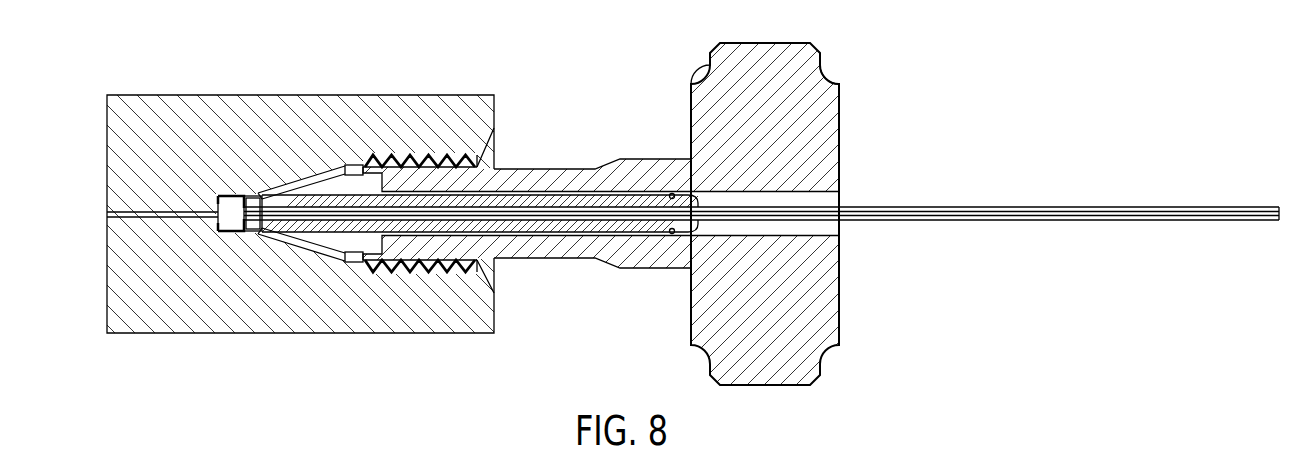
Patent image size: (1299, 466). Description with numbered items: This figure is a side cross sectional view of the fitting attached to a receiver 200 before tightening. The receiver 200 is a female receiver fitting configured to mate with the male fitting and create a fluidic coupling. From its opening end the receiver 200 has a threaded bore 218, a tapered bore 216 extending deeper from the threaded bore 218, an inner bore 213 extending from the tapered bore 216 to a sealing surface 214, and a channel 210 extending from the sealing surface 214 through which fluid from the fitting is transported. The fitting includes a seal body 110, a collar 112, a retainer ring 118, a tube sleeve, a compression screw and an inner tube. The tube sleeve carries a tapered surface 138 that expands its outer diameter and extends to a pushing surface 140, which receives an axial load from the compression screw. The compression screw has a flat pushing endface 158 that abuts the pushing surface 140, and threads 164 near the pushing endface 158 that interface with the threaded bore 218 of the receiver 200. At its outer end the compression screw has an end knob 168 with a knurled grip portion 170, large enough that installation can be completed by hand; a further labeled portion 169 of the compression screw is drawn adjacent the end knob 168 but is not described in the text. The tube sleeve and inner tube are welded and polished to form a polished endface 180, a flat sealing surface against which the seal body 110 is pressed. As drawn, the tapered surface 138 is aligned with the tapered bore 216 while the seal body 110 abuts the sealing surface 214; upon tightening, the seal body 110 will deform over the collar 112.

The seal body 110 is at (218, 222).
The collar 112 is at (263, 193).
The retainer ring 118 is at (676, 234).
The tapered surface 138 is at (313, 180).
The pushing surface 140 is at (368, 248).
The pushing endface 158 is at (368, 248).
The threads 164 is at (452, 163).
The end knob 168 is at (708, 82).
The neck 169 is at (647, 238).
The knurled grip portion 170 is at (797, 50).
The polished endface 180 is at (246, 206).
The receiver 200 is at (229, 100).
The channel 210 is at (143, 210).
The inner bore 213 is at (243, 193).
The sealing surface 214 is at (223, 193).
The tapered bore 216 is at (362, 166).
The threaded bore 218 is at (393, 158).